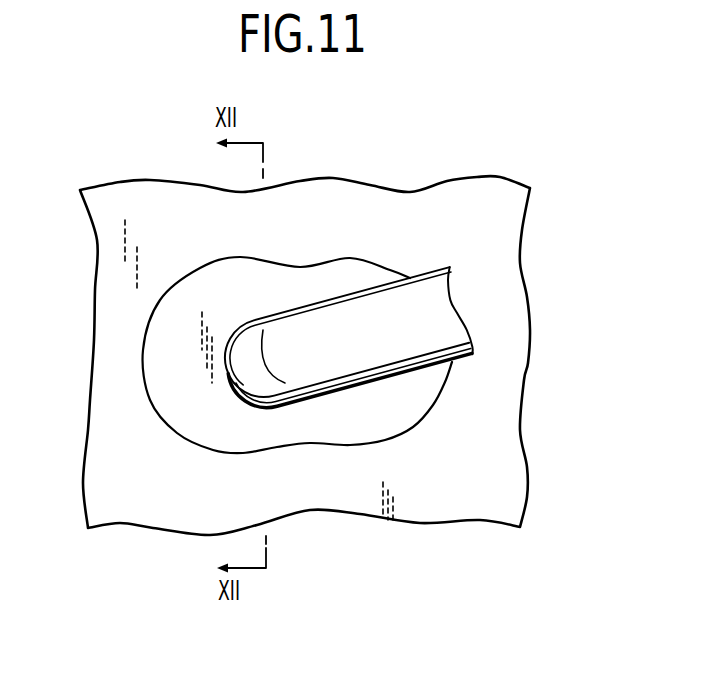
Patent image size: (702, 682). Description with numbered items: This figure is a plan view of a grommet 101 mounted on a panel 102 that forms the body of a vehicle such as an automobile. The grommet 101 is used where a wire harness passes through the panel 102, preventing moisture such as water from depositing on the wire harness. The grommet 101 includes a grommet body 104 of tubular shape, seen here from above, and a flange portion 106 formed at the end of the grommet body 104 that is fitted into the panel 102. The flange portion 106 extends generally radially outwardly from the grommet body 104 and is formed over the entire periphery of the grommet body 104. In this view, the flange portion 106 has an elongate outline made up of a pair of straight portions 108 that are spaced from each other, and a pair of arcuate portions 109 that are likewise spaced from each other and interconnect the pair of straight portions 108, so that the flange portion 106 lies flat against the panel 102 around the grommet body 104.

The grommet 101 is at (404, 303).
The panel 102 is at (502, 467).
The grommet body 104 is at (433, 313).
The flange portion 106 is at (356, 258).
The straight portions 108 is at (297, 349).
The arcuate portions 109 is at (158, 367).